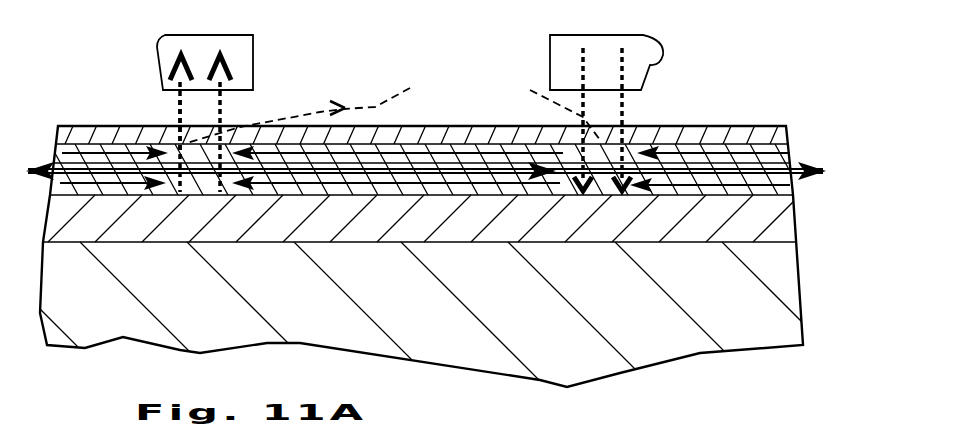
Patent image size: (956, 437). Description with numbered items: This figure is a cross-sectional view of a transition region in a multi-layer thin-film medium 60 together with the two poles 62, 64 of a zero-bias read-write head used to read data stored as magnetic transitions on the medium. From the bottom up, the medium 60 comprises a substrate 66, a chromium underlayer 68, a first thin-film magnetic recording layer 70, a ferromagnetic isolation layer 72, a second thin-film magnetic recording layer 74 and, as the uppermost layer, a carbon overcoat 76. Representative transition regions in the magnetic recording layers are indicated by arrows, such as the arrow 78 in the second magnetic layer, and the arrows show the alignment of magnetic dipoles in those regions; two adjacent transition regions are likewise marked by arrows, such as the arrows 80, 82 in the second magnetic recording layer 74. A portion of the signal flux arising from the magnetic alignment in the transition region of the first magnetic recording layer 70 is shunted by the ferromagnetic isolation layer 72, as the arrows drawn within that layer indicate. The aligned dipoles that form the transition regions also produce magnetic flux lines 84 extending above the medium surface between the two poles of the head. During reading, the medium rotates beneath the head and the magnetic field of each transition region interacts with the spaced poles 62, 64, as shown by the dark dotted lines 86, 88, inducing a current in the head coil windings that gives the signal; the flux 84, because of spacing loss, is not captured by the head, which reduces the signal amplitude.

The multi-layer thin-film medium 60 is at (841, 277).
The pole 62 is at (558, 52).
The pole 64 is at (177, 48).
The substrate 66 is at (602, 313).
The chromium underlayer 68 is at (609, 230).
The first thin-film magnetic recording layer 70 is at (767, 190).
The ferromagnetic isolation layer 72 is at (760, 167).
The second thin-film magnetic recording layer 74 is at (439, 169).
The cover layer 76 is at (770, 133).
The arrow 78 is at (307, 153).
The arrow 80 is at (80, 155).
The arrow 82 is at (698, 153).
The magnetic flux lines 84 is at (318, 108).
The dark dotted line 86 is at (175, 107).
The dark dotted line 88 is at (547, 108).